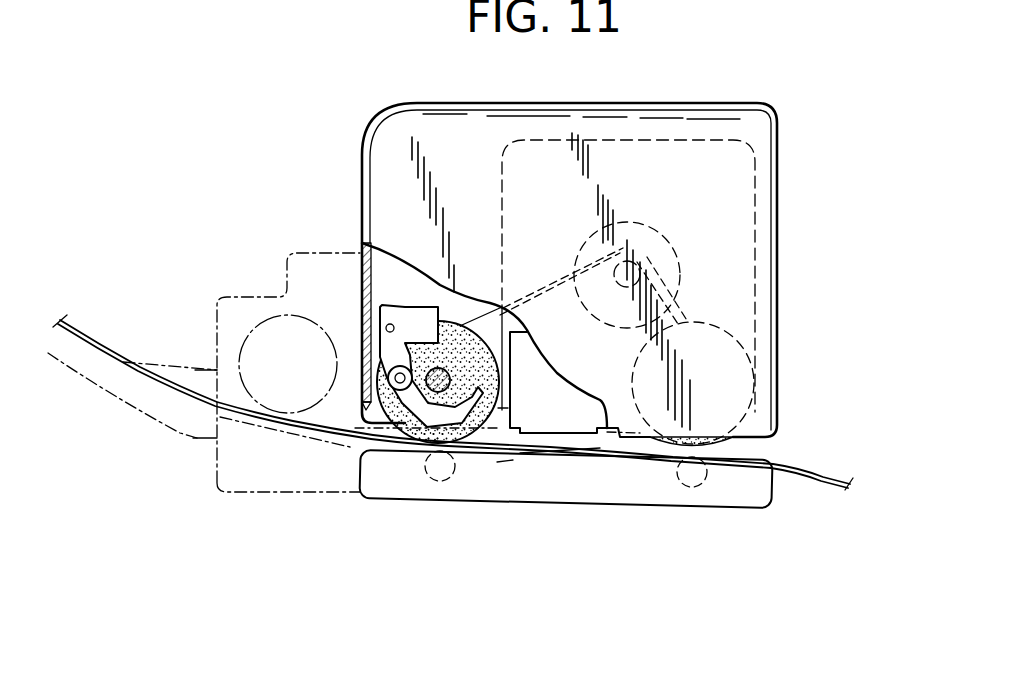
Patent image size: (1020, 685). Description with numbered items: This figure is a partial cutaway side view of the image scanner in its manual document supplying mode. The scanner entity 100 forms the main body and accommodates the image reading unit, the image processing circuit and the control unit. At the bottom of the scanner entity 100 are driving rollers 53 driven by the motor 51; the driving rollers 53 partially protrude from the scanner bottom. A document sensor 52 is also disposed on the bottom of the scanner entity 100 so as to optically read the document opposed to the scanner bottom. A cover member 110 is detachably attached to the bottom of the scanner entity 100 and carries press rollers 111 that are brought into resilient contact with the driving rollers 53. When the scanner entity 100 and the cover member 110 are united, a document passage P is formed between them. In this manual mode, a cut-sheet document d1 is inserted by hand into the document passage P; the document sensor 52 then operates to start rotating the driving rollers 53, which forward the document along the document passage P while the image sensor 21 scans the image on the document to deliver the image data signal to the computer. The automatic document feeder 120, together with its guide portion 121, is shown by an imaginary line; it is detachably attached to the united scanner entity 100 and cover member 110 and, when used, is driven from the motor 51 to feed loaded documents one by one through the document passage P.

The scanner entity 100 is at (775, 325).
The motor 51 is at (753, 221).
The document sensor 52 is at (468, 430).
The driving rollers 53 is at (410, 443).
The image sensor 21 is at (550, 407).
The document passage P is at (607, 450).
The press rollers 111 is at (430, 477).
The cover member 110 is at (643, 500).
The automatic document feeder 120 is at (300, 255).
The sheet guide 121 is at (97, 377).
The recording sheet d1 is at (80, 330).